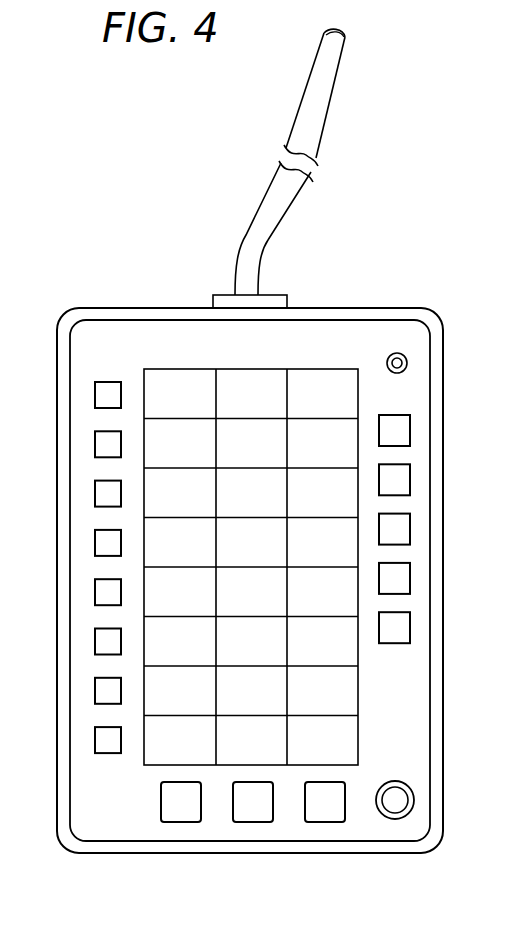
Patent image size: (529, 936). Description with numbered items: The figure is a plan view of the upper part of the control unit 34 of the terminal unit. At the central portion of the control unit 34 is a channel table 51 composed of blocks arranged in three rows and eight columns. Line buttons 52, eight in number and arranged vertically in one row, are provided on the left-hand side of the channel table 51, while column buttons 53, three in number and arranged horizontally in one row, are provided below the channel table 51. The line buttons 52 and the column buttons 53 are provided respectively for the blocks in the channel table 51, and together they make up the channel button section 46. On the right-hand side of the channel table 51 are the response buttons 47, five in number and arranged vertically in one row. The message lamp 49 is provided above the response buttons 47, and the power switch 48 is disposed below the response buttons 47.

The control unit 34 is at (380, 292).
The channel button section 46 is at (174, 635).
The response buttons 47 is at (451, 408).
The power switch 48 is at (400, 805).
The message lamp 49 is at (407, 362).
The channel table 51 is at (178, 377).
The line buttons 52 is at (50, 755).
The column buttons 53 is at (347, 855).